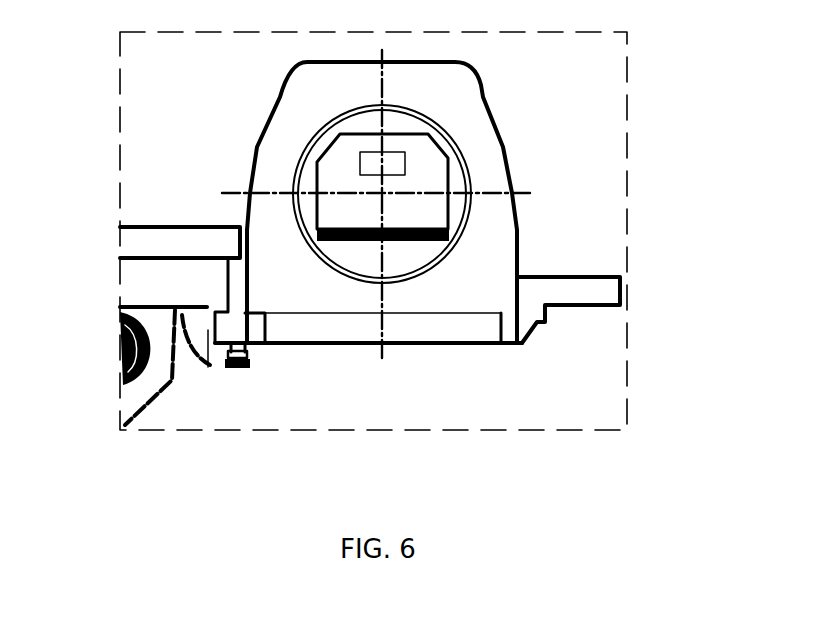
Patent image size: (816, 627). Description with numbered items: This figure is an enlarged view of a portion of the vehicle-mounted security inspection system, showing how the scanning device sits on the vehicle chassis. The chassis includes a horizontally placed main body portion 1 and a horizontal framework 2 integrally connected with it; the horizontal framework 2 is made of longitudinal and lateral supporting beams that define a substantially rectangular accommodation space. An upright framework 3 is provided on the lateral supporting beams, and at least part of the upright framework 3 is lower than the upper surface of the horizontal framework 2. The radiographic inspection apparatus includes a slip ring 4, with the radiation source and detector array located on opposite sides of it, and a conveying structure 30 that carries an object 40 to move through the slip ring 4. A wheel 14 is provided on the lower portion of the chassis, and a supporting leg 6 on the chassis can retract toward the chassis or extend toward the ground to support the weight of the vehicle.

The main body portion 1 is at (137, 281).
The horizontal framework 2 is at (550, 292).
The upright framework 3 is at (450, 105).
The slip ring 4 is at (470, 173).
The supporting leg 6 is at (240, 370).
The wheel 14 is at (150, 382).
The conveying structure 30 is at (360, 183).
The object 40 is at (385, 165).